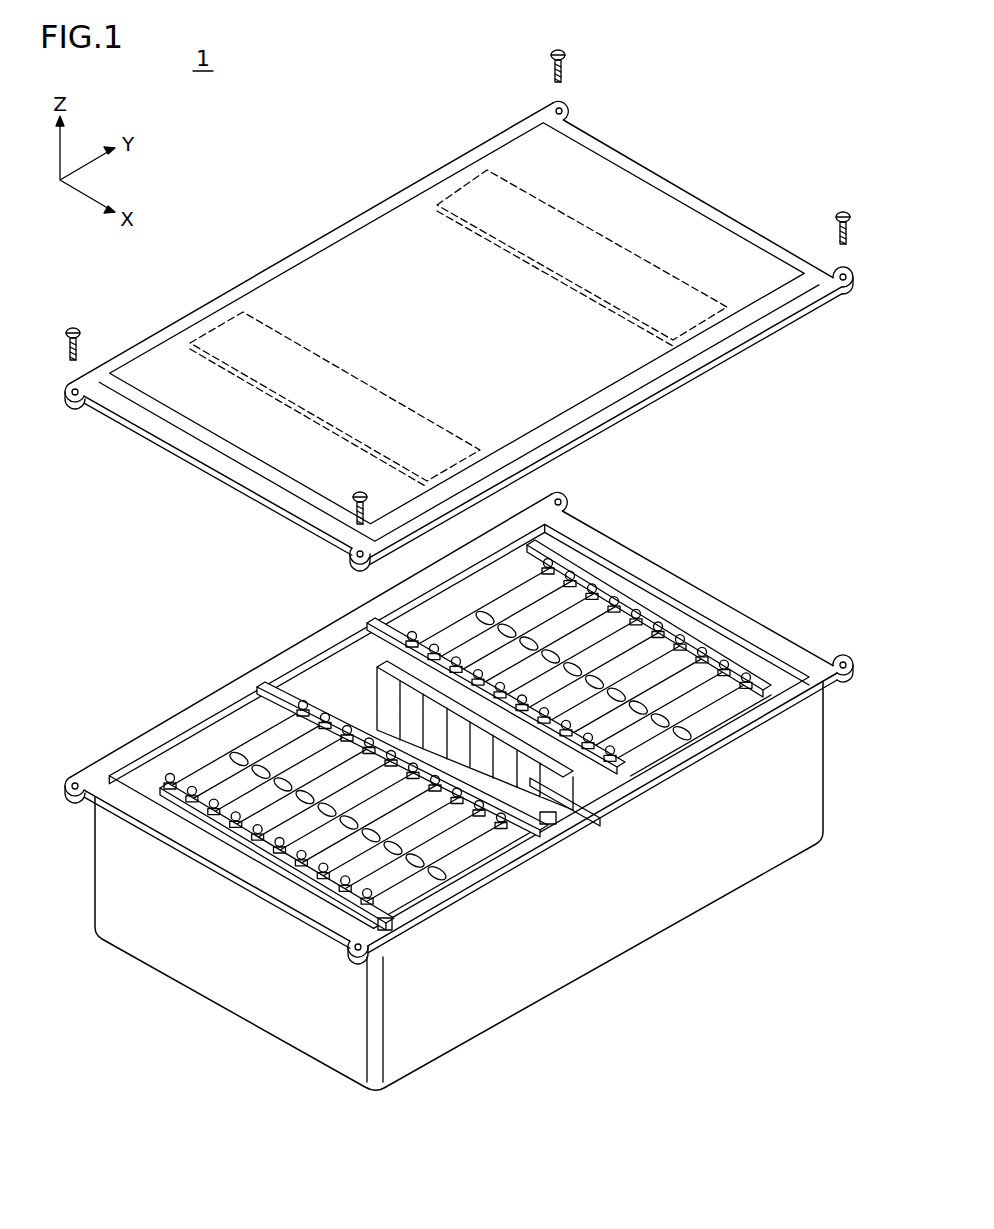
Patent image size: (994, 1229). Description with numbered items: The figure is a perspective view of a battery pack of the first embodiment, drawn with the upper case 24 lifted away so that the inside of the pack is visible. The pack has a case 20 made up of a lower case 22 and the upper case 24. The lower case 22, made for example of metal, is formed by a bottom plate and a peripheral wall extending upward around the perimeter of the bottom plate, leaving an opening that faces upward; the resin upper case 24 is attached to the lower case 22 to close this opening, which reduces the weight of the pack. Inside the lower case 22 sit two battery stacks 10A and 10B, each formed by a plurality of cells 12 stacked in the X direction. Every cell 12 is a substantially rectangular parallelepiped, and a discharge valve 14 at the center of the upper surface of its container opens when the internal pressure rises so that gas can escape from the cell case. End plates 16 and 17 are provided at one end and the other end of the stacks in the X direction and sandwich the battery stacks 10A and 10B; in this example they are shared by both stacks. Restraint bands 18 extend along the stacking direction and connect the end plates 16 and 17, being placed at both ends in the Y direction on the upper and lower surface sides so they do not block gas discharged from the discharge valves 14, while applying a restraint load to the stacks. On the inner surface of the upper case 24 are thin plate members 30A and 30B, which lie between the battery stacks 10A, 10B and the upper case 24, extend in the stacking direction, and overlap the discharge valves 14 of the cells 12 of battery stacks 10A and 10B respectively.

The battery stack 10A is at (205, 725).
The battery stack 10B is at (427, 605).
The cell 12 is at (540, 613).
The discharge valve 14 is at (498, 635).
The end plate 16 is at (332, 678).
The end plate 17 is at (567, 813).
The restraint band 18 is at (383, 923).
The case 20 is at (866, 368).
The lower case 22 is at (753, 627).
The upper case 24 is at (720, 343).
The plate member 30A is at (268, 347).
The plate member 30B is at (447, 170).